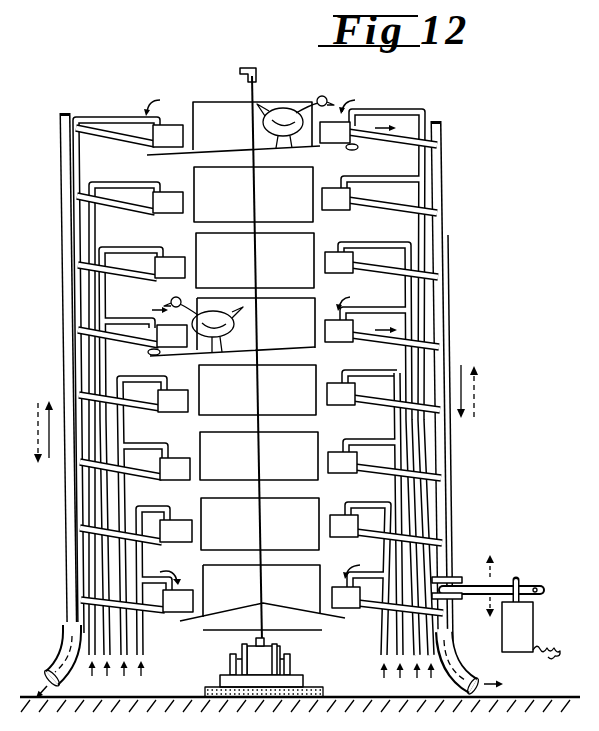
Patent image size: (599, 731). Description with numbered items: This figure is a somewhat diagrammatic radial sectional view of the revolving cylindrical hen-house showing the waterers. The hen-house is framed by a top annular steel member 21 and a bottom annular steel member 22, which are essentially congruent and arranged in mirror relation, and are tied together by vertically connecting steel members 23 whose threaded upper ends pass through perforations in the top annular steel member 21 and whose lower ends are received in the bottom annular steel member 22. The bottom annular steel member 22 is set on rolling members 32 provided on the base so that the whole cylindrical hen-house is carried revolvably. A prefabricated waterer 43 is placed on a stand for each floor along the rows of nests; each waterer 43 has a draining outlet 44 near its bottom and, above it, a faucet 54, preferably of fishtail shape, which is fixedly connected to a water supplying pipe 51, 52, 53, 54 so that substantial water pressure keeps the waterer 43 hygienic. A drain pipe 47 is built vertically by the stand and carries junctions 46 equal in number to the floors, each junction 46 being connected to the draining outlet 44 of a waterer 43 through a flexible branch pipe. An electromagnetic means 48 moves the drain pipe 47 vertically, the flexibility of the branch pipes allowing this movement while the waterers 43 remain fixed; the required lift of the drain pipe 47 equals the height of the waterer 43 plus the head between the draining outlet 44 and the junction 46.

The top annular steel member 21 is at (250, 66).
The bottom annular steel member 22 is at (243, 642).
The vertically connecting steel member 23 is at (257, 95).
The rolling member 32 is at (283, 658).
The waterer 43 is at (170, 130).
The draining outlet 44 is at (350, 211).
The junction 46 is at (445, 345).
The drain pipe 47 is at (446, 236).
The electromagnetic means 48 is at (522, 630).
The water supplying pipe 51 is at (383, 646).
The water supplying pipe 52 is at (399, 654).
The water supplying pipe 53 is at (416, 654).
The faucet 54 is at (341, 379).